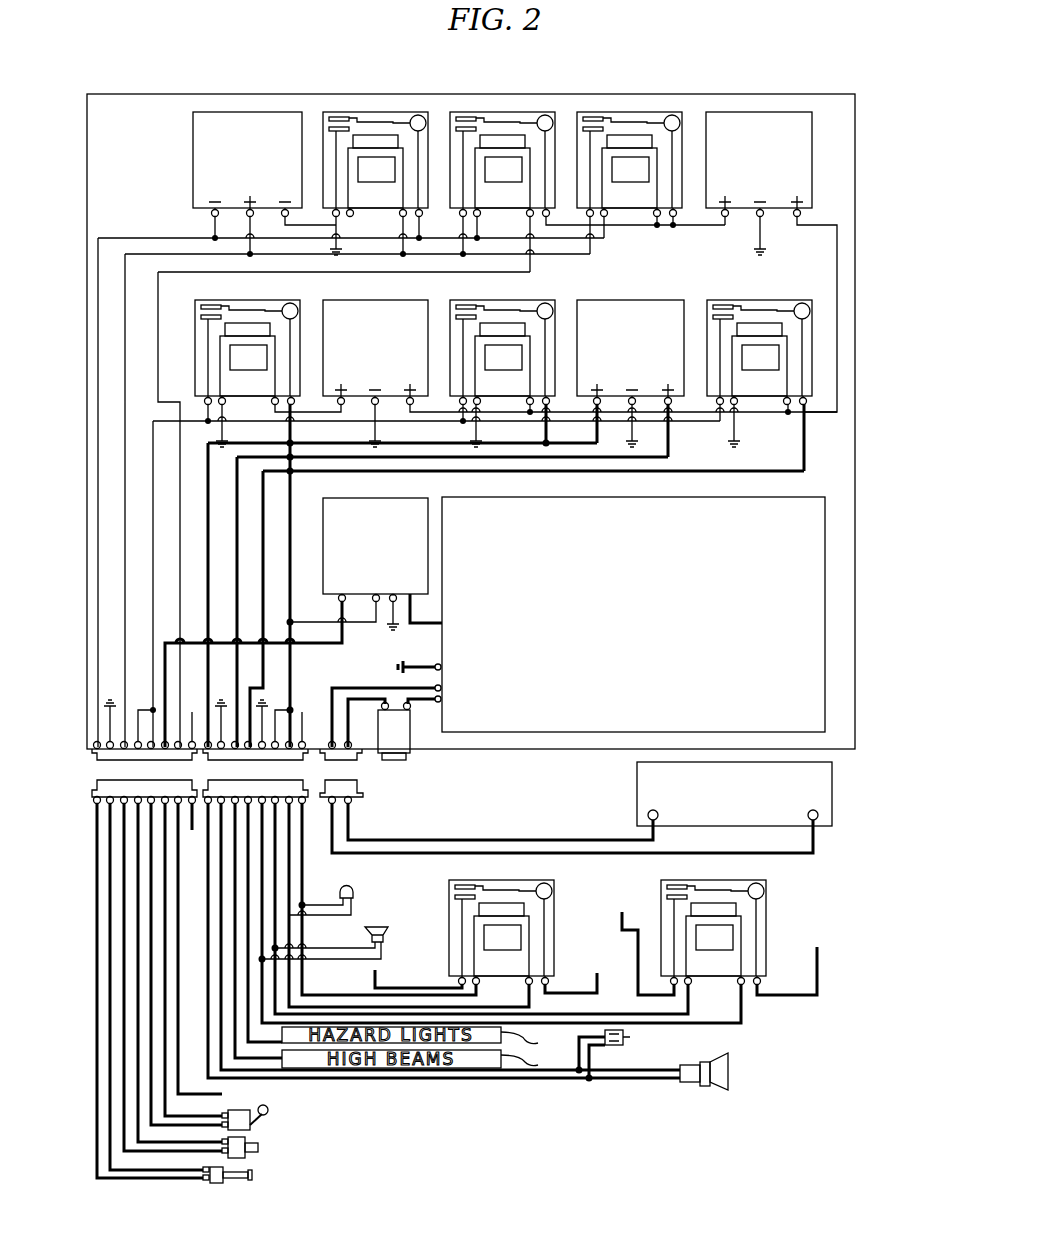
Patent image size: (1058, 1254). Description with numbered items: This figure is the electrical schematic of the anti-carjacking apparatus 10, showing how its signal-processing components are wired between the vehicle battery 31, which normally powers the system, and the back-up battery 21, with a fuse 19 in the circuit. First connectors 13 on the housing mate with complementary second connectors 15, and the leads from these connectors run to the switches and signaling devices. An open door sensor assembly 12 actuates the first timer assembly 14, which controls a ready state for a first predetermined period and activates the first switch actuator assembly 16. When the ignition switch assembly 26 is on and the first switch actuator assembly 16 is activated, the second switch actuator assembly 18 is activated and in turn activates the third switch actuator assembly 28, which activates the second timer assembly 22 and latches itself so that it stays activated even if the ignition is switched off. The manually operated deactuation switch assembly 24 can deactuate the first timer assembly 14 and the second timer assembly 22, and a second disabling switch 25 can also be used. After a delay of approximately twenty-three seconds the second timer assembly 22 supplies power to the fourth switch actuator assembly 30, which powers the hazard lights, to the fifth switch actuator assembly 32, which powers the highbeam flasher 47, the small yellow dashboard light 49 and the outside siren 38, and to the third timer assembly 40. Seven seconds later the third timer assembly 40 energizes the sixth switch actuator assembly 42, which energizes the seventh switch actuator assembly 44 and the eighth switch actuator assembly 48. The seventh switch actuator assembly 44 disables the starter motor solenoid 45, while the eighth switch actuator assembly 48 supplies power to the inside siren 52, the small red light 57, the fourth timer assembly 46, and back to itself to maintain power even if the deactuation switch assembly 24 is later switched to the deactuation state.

The anti-carjacking apparatus 10 is at (477, 576).
The open door sensor assembly 12 is at (258, 1178).
The first connectors 13 is at (262, 752).
The first timer assembly 14 is at (228, 122).
The second connectors 15 is at (247, 790).
The first switch actuator assembly 16 is at (393, 100).
The second switch actuator assembly 18 is at (532, 104).
The fuse 19 is at (404, 738).
The back-up battery 21 is at (818, 536).
The second timer assembly 22 is at (775, 124).
The deactuation switch assembly 24 is at (264, 1150).
The second disabling switch 25 is at (270, 1125).
The ignition switch assembly 26 is at (398, 985).
The third switch actuator assembly 28 is at (678, 98).
The fourth switch actuator assembly 30 is at (822, 345).
The vehicle battery 31 is at (820, 790).
The fifth switch actuator assembly 32 is at (520, 297).
The outside siren 38 is at (728, 1075).
The third timer assembly 40 is at (362, 318).
The sixth switch actuator assembly 42 is at (190, 322).
The seventh switch actuator assembly 44 is at (560, 925).
The starter motor solenoid 45 is at (560, 985).
The fourth timer assembly 46 is at (393, 514).
The highbeam flasher 47 is at (610, 315).
The eighth switch actuator assembly 48 is at (775, 925).
The small yellow dashboard light 49 is at (630, 1037).
The inside siren 52 is at (380, 927).
The small red light 57 is at (353, 893).